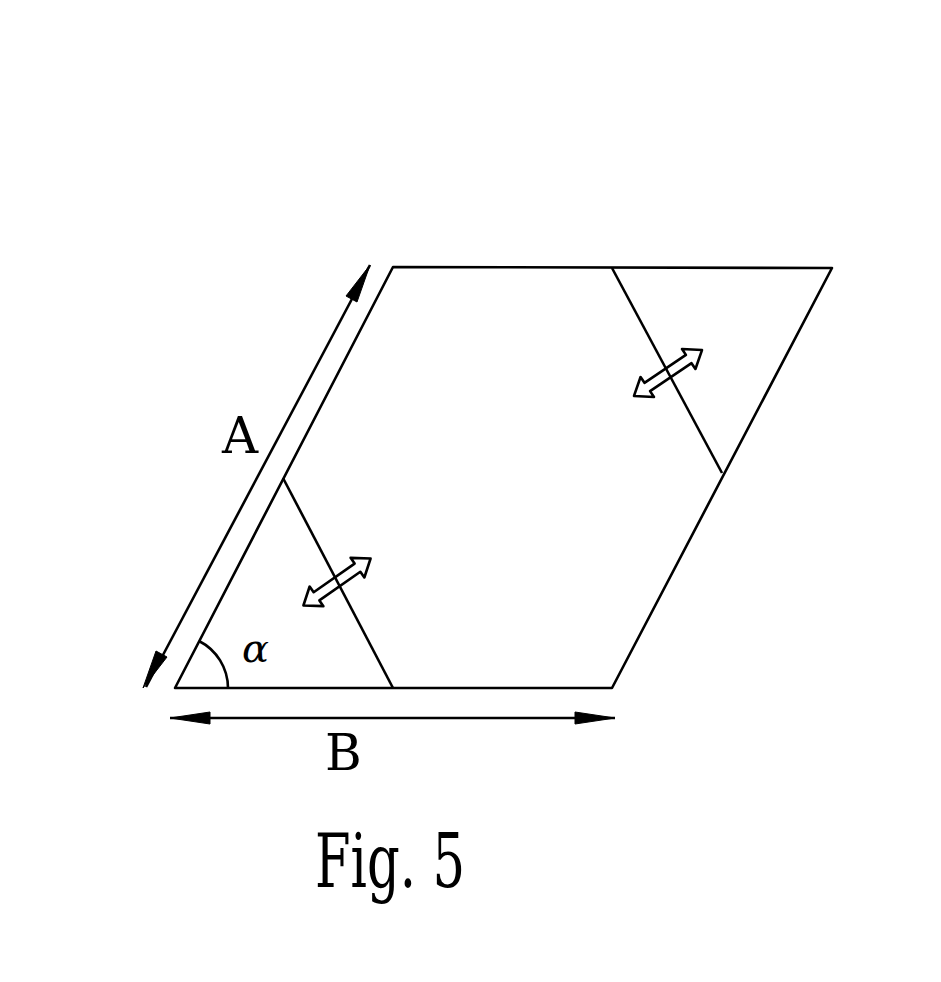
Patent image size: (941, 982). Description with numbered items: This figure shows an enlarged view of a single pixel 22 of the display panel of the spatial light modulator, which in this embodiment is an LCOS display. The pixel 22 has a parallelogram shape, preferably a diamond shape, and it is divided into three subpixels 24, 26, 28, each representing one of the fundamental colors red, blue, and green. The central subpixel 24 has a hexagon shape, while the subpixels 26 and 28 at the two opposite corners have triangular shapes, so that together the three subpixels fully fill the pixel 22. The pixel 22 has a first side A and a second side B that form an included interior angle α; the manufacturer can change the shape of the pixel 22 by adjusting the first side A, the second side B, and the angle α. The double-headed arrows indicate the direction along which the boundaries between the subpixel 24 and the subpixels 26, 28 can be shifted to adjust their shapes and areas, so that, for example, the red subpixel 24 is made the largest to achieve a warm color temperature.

The pixel 22 is at (648, 157).
The subpixel 24 is at (463, 307).
The subpixel 26 is at (757, 383).
The subpixel 28 is at (267, 582).